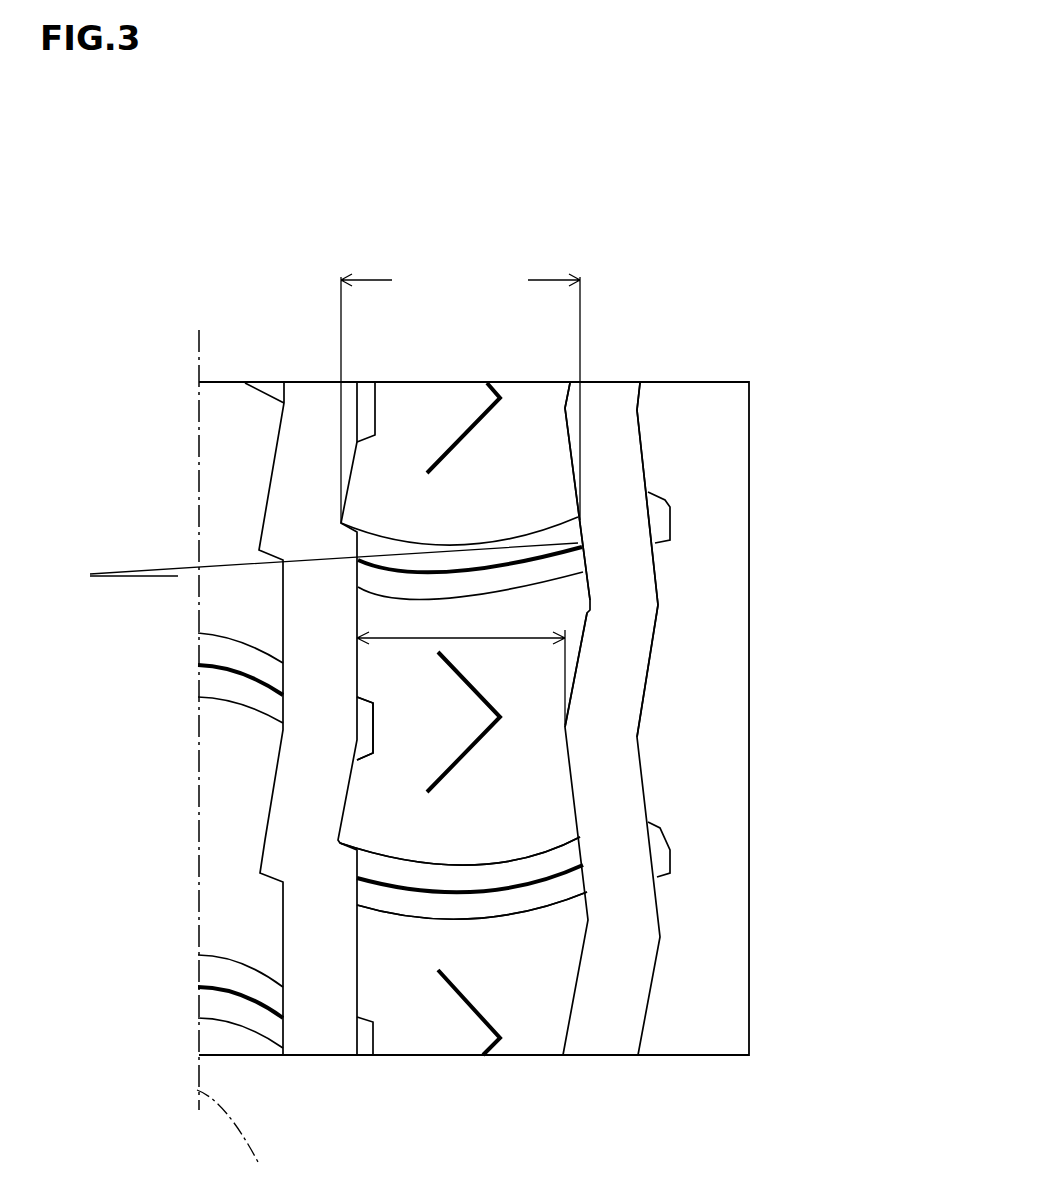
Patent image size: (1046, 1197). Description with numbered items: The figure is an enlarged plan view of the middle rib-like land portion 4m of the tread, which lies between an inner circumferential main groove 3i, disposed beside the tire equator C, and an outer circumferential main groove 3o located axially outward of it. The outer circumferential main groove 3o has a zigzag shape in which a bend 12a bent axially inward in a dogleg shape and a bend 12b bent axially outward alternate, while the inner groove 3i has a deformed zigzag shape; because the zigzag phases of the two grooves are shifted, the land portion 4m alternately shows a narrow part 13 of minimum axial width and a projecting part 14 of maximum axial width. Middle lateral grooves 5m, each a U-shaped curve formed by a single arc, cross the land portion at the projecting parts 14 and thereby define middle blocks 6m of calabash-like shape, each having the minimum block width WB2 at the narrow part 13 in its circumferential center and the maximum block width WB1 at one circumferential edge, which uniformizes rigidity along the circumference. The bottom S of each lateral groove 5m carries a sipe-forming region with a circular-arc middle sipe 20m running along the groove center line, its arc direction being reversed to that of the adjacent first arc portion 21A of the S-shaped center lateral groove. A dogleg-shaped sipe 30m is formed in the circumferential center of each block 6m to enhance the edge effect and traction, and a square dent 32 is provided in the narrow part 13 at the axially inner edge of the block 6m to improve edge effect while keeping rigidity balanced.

The inner circumferential main groove 3i is at (309, 400).
The outer circumferential main groove 3o is at (612, 400).
The middle block 6m is at (546, 831).
The middle sipe 20m is at (537, 882).
The middle lateral groove 5m is at (515, 913).
The groove bottom S is at (563, 853).
The dogleg-shaped sipe 30m is at (468, 752).
The first arc portion 21A is at (243, 706).
The square dent 32 is at (362, 735).
The axially inwardly bent bend 12a is at (666, 419).
The axially outwardly bent bend 12b is at (678, 627).
The narrow part 13 is at (592, 729).
The projecting part 14 is at (596, 513).
The maximum block width WB1 is at (460, 395).
The minimum block width WB2 is at (527, 637).
The middle rib-like land portion 4m is at (563, 1067).
The tire equator C is at (234, 1141).